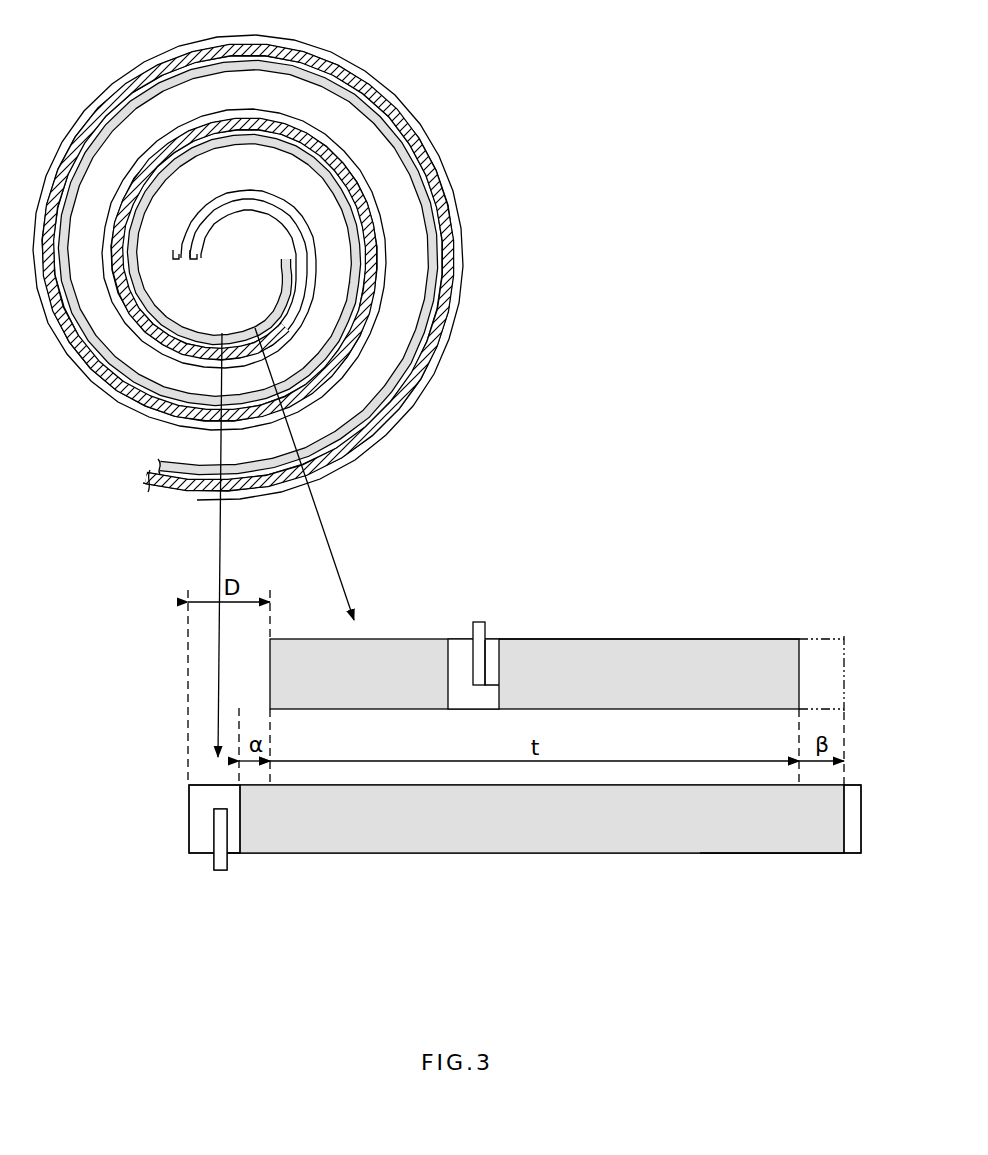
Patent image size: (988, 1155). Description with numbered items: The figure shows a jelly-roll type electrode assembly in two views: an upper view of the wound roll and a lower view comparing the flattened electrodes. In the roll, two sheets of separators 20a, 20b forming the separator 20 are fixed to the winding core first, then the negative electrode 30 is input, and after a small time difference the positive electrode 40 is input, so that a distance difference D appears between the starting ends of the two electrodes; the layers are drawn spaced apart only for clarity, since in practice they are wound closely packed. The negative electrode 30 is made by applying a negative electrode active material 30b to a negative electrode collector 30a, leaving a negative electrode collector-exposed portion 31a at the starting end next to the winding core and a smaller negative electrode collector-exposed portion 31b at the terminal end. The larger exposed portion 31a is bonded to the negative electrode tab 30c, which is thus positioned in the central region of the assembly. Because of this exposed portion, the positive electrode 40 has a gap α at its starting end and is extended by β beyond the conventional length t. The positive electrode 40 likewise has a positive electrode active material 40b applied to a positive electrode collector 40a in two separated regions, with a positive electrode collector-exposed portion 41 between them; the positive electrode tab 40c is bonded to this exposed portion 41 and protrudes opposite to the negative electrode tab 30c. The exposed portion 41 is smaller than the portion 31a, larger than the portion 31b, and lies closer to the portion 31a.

The separator 20 is at (248, 270).
The separator 20a is at (176, 262).
The separator 20b is at (194, 262).
The negative electrode 30 is at (271, 303).
The negative electrode collector 30a is at (233, 853).
The negative electrode active material 30b is at (787, 853).
The negative electrode tab 30c is at (214, 860).
The negative electrode collector-exposed portion 31a is at (205, 822).
The negative electrode collector-exposed portion 31b is at (861, 822).
The positive electrode 40 is at (287, 322).
The positive electrode collector 40a is at (492, 648).
The positive electrode active material 40b is at (601, 640).
The positive electrode tab 40c is at (478, 624).
The positive electrode collector-exposed portion 41 is at (461, 648).